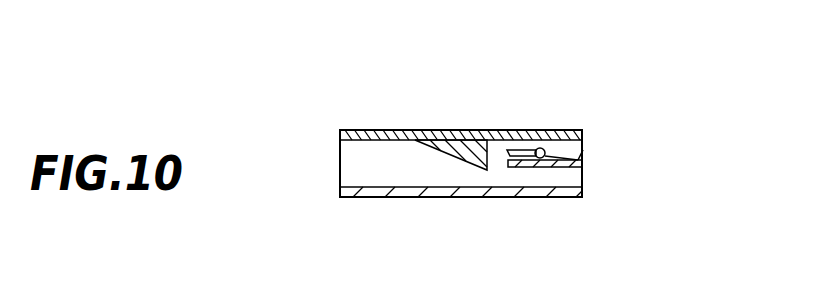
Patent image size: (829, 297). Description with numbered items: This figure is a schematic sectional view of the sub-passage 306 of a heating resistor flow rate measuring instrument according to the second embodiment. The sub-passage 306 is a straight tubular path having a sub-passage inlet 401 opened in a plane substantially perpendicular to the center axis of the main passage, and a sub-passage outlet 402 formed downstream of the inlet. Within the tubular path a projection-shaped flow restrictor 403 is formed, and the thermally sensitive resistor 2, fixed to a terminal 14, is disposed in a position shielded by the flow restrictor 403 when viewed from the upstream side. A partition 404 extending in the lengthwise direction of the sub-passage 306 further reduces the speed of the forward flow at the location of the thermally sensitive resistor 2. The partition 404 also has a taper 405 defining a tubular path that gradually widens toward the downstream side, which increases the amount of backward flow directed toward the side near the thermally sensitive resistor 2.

The sub-passage 306 is at (378, 95).
The thermally sensitive resistor 2 is at (568, 130).
The sub-passage inlet 401 is at (340, 167).
The sub-passage outlet 402 is at (583, 175).
The flow restrictor 403 is at (469, 158).
The partition 404 is at (551, 190).
The taper 405 is at (583, 150).
The terminal 14 is at (507, 150).